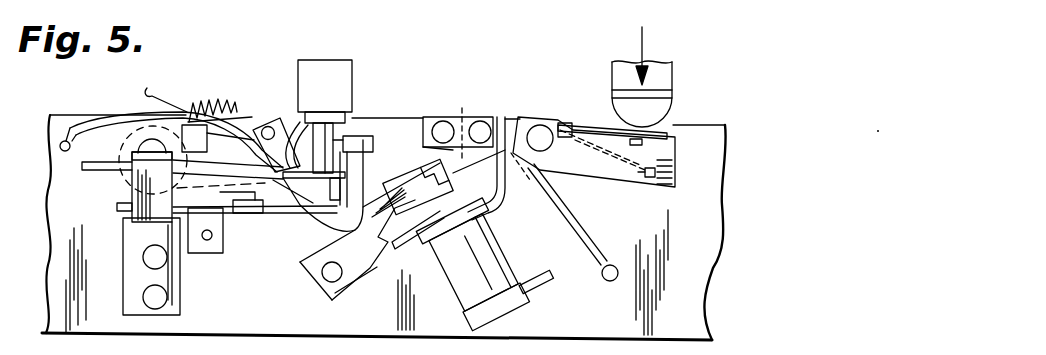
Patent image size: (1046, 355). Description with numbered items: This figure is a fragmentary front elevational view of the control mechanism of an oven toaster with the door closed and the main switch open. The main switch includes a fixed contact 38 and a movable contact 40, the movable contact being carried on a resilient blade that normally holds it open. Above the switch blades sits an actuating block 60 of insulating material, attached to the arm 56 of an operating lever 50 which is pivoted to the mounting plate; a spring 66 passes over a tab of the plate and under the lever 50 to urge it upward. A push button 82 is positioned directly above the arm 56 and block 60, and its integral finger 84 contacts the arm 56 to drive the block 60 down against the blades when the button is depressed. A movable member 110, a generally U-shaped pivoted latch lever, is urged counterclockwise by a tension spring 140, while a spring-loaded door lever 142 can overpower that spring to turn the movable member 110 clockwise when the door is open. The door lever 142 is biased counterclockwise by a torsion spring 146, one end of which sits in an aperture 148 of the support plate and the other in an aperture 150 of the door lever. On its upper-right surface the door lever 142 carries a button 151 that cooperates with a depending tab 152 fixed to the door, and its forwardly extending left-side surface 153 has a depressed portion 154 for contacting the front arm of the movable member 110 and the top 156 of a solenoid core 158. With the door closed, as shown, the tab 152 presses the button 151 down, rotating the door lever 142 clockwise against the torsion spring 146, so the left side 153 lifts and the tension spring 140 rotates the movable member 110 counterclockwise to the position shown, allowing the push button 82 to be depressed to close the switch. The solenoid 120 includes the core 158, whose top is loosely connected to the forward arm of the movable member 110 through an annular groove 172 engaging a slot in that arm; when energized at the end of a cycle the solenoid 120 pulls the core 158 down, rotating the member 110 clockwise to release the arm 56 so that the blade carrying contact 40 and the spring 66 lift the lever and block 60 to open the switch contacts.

The contact 38 is at (303, 235).
The movable contact 40 is at (292, 210).
The operating lever 50 is at (128, 144).
The arm 56 is at (335, 132).
The actuating block 60 is at (287, 123).
The spring 66 is at (125, 116).
The push button 82 is at (343, 88).
The finger 84 is at (352, 120).
The movable member 110 is at (367, 262).
The solenoid 120 is at (507, 303).
The tension spring 140 is at (217, 100).
The door lever 142 is at (675, 162).
The torsion spring 146 is at (574, 232).
The aperture 148 is at (611, 285).
The aperture 150 is at (675, 182).
The button 151 is at (663, 130).
The depending tab 152 is at (676, 97).
The left-side surface 153 is at (458, 125).
The depressed portion 154 is at (417, 172).
The top 156 is at (495, 198).
The solenoid core 158 is at (487, 228).
The annular groove 172 is at (418, 237).